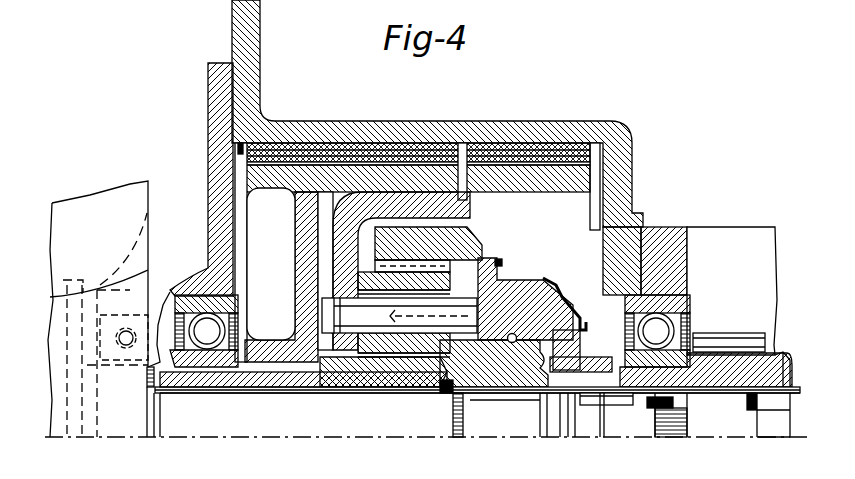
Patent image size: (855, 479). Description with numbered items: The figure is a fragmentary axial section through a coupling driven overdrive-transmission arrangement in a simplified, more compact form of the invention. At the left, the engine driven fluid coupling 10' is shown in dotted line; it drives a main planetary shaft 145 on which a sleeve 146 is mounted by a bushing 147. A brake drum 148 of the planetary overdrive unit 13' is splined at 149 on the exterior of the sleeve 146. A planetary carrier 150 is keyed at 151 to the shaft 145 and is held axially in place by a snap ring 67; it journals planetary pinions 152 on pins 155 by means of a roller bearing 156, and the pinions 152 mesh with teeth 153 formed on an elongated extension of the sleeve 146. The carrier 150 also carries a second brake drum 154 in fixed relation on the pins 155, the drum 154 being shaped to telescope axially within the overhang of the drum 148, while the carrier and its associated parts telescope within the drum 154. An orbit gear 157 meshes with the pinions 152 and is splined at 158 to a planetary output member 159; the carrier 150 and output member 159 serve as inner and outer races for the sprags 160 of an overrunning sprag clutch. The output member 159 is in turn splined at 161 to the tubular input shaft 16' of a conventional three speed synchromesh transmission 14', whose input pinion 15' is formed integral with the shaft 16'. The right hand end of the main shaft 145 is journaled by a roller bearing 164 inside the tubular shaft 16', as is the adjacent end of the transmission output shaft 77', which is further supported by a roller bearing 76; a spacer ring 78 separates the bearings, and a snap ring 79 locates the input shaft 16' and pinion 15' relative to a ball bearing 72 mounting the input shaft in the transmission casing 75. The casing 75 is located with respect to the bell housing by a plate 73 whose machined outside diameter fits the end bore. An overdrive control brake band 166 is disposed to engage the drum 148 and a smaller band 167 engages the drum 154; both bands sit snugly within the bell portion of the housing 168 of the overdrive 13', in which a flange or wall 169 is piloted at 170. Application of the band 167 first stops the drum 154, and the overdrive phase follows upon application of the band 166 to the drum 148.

The fluid coupling 10' is at (154, 165).
The planetary overdrive unit 13' is at (574, 86).
The synchromesh transmission 14' is at (738, 332).
The input pinion 15' is at (755, 321).
The tubular input shaft 16' is at (676, 424).
The snap ring 67 is at (543, 404).
The ball bearing 72 is at (712, 290).
The plate 73 is at (643, 228).
The casing 75 is at (672, 230).
The roller bearing 76 is at (758, 416).
The transmission output shaft 77' is at (765, 444).
The spacer ring 78 is at (688, 395).
The snap ring 79 is at (612, 385).
The main planetary shaft 145 is at (226, 430).
The sleeve 146 is at (297, 393).
The bushing 147 is at (203, 396).
The brake drum 148 is at (296, 222).
The spline 149 is at (277, 375).
The planetary carrier 150 is at (490, 398).
The key 151 is at (462, 394).
The planetary pinions 152 is at (490, 241).
The teeth 153 is at (373, 382).
The second brake drum 154 is at (483, 201).
The pins 155 is at (335, 317).
The roller bearing 156 is at (390, 302).
The orbit gear 157 is at (466, 226).
The spline 158 is at (503, 263).
The planetary output member 159 is at (575, 292).
The sprags 160 is at (522, 380).
The spline 161 is at (560, 402).
The roller bearing 164 is at (615, 392).
The overdrive control brake band 166 is at (330, 160).
The brake band 167 is at (600, 148).
The housing 168 is at (393, 131).
The flange 169 is at (210, 80).
The pilot 170 is at (240, 152).